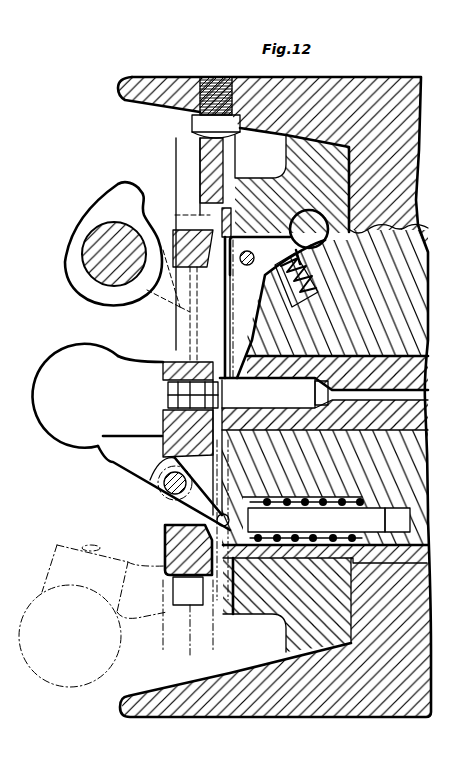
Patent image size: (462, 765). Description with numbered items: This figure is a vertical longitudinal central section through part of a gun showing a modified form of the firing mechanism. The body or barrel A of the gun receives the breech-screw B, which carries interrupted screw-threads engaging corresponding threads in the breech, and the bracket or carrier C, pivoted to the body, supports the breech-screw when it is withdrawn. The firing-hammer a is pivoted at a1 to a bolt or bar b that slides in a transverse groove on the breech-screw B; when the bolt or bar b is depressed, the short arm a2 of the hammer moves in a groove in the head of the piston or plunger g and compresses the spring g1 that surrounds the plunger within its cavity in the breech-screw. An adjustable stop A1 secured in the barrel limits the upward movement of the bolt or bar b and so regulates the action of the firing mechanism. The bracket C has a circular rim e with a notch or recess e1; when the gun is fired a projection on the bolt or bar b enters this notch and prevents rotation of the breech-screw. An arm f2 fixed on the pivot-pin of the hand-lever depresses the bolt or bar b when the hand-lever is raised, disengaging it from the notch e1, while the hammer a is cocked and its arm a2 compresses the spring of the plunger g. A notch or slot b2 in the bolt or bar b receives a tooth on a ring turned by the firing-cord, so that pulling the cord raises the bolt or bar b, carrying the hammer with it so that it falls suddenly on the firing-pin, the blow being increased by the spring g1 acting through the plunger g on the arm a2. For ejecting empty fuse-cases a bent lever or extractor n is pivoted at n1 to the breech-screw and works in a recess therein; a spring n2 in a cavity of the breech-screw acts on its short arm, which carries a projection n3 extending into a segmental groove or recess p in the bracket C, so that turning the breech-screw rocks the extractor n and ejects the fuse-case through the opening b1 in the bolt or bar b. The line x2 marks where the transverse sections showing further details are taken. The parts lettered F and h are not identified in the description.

The body or barrel of the gun A is at (274, 397).
The adjustable stop A1 is at (192, 125).
The breech-screw B is at (336, 290).
The bracket or carrier C is at (287, 390).
The cylinder F is at (324, 393).
The spring housing h is at (325, 487).
The rod or plunger g is at (313, 520).
The spring g1 is at (300, 495).
The circular rim e is at (206, 249).
The notch or recess e1 is at (239, 290).
The opening in the sliding bolt or bar b1 is at (193, 250).
The section line x2 is at (180, 454).
The arm f2 is at (113, 234).
The notch or slot b2 is at (114, 254).
The bent lever or extractor n is at (277, 307).
The pivot of the extractor n1 is at (254, 256).
The spring n2 is at (309, 229).
The projection n3 is at (318, 280).
The segmental groove or recess p is at (294, 214).
The firing-hammer a is at (131, 437).
The pivot of the hammer a1 is at (93, 593).
The short arm of the hammer a2 is at (186, 486).
The bolt or bar b is at (192, 483).